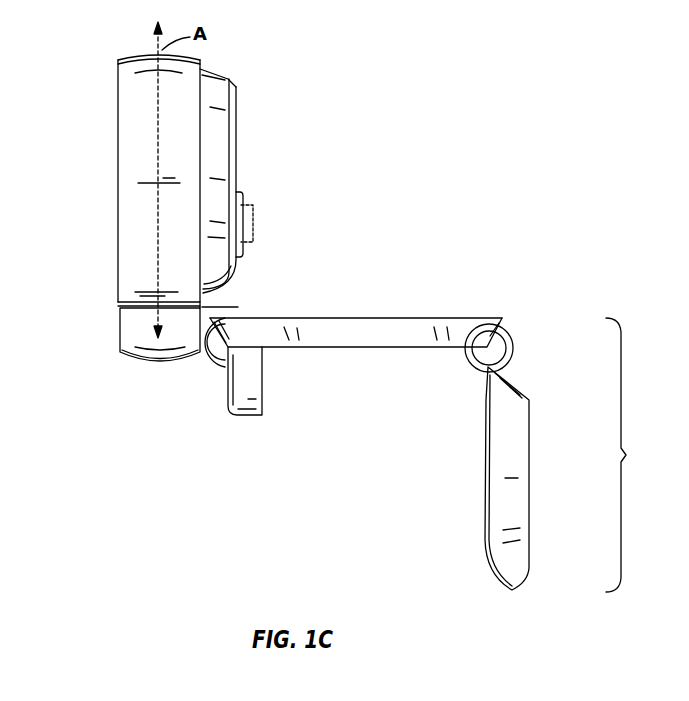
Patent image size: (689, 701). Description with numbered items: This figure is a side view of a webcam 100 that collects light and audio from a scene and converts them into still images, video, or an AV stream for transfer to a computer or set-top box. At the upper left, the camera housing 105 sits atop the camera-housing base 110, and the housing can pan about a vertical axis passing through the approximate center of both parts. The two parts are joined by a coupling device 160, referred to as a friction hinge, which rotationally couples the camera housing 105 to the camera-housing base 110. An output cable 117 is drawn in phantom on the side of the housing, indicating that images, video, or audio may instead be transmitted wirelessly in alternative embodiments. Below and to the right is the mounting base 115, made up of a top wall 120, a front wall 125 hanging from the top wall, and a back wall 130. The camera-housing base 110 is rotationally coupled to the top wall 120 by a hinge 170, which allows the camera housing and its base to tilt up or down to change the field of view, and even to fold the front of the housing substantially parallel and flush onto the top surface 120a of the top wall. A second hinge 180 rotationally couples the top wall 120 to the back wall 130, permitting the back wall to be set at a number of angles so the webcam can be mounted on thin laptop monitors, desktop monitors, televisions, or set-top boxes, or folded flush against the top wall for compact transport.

The webcam 100 is at (87, 464).
The camera housing 105 is at (140, 56).
The camera-housing base 110 is at (120, 332).
The mounting base 115 is at (634, 455).
The output cable 117 is at (248, 223).
The top wall 120 is at (358, 306).
The top surface of top wall 120a is at (358, 318).
The front wall 125 is at (240, 417).
The back wall 130 is at (530, 571).
The coupling device 160 is at (238, 307).
The hinge 170 is at (207, 362).
The hinge 180 is at (513, 350).